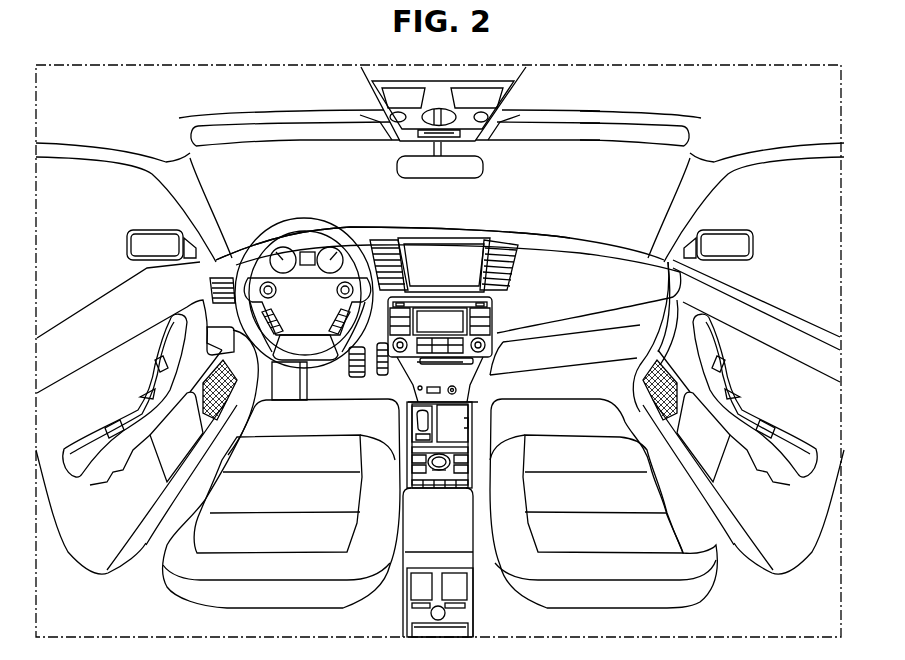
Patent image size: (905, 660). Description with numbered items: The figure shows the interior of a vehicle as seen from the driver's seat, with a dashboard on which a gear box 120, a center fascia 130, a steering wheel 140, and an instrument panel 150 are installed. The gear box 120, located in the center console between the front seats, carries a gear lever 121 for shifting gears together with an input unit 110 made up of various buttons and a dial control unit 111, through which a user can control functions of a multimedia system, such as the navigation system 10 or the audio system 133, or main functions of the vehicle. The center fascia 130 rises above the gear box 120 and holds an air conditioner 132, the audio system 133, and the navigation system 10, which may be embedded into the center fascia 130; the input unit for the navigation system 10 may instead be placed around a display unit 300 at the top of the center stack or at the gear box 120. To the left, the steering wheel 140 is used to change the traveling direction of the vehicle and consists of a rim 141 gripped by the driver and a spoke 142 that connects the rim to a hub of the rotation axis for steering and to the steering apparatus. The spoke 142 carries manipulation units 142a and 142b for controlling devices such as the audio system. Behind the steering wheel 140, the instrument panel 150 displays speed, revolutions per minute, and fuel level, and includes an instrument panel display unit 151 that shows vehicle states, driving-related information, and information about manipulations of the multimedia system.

The navigation system 10 is at (480, 233).
The input unit 110 is at (458, 462).
The dial control unit 111 is at (428, 462).
The gear box 120 is at (478, 440).
The gear lever 121 is at (410, 416).
The center fascia 130 is at (532, 232).
The air conditioner 132 is at (510, 262).
The audio system 133 is at (506, 312).
The steering wheel 140 is at (247, 263).
The rim 141 is at (285, 225).
The spoke 142 is at (283, 303).
The manipulation unit 142a is at (258, 246).
The manipulation unit 142b is at (364, 242).
The instrument panel 150 is at (326, 212).
The instrument panel display unit 151 is at (332, 244).
The display unit 300 is at (450, 247).